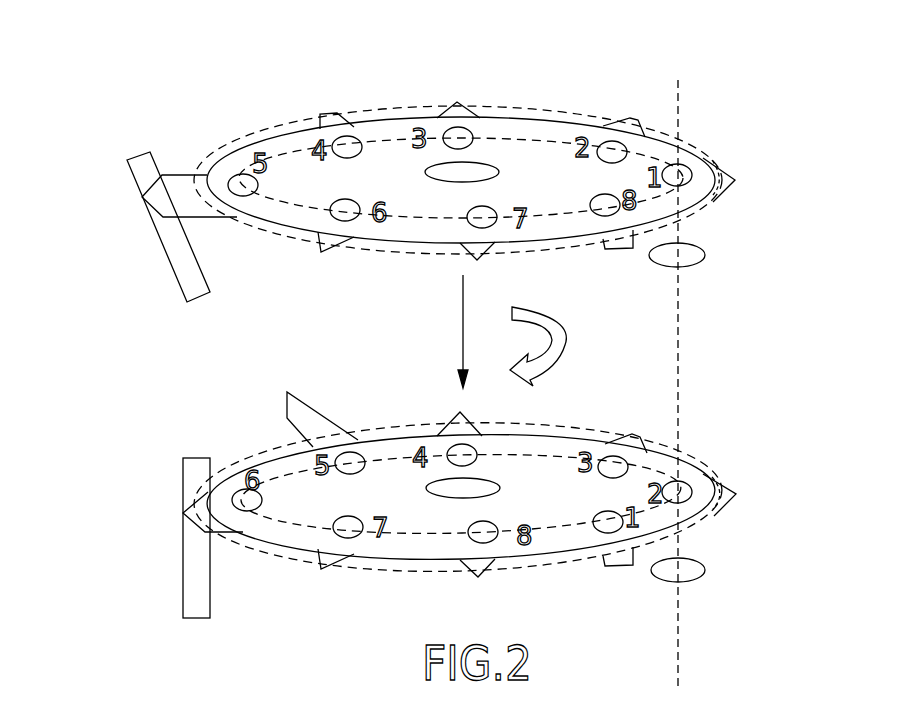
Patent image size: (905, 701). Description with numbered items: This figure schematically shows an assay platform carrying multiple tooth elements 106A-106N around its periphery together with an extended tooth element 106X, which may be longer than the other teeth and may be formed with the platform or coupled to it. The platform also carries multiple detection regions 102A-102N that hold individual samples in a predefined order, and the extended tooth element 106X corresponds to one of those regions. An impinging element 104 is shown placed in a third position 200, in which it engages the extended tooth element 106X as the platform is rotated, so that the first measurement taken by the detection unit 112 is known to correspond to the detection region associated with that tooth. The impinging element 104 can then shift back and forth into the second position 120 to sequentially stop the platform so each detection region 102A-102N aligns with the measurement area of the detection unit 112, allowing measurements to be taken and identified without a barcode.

The detection regions 102A-102N is at (678, 175).
The tooth elements 106A-106N is at (457, 102).
The extended tooth element 106X is at (193, 208).
The impinging element 104 is at (130, 373).
The third position 200 is at (158, 235).
The second position 120 is at (193, 570).
The detection unit 112 is at (687, 263).